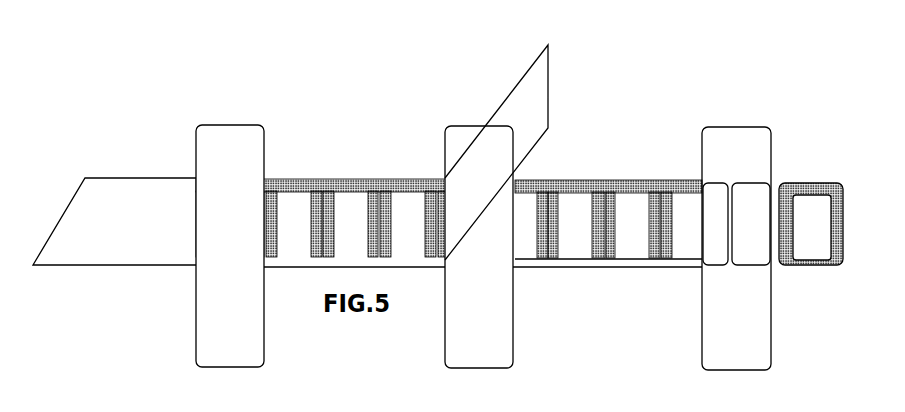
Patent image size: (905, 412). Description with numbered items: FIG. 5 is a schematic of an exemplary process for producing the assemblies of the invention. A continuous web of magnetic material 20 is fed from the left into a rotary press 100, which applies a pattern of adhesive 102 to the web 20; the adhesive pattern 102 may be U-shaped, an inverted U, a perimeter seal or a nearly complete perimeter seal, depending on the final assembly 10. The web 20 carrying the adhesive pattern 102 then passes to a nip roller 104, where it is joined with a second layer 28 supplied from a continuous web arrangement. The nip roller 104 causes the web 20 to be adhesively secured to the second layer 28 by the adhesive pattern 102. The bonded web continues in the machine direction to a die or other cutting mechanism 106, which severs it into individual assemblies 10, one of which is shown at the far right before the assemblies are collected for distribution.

The assembly 10 is at (810, 225).
The web of magnetic material 20 is at (149, 245).
The second layer 28 is at (533, 98).
The rotary press 100 is at (230, 125).
The pattern of adhesive 102 is at (244, 190).
The nip roller 104 is at (460, 128).
The cutting mechanism 106 is at (738, 127).